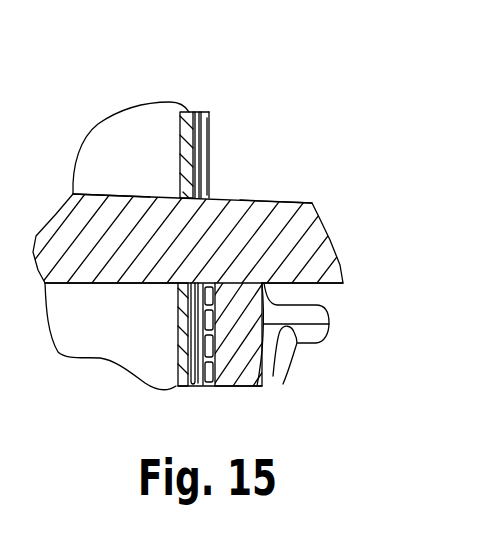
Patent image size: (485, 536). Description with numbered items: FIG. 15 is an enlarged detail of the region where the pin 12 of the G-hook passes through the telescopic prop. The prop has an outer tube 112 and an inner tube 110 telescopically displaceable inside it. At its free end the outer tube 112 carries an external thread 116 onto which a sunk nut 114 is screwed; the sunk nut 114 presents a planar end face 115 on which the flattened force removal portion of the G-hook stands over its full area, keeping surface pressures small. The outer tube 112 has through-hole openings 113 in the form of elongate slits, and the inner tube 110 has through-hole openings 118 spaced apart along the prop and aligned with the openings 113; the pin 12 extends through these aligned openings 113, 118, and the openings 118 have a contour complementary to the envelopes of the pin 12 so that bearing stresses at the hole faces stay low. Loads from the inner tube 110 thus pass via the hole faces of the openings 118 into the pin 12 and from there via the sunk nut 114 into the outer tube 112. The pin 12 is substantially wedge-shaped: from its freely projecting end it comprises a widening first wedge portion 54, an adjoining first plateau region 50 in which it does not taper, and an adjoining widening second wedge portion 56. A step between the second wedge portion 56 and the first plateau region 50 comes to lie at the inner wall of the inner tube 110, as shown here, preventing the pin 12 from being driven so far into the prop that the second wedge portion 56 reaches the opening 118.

The pin 12 is at (318, 245).
The first plateau region 50 is at (203, 182).
The first wedge portion 54 is at (301, 203).
The second wedge portion 56 is at (134, 193).
The inner tube 110 is at (191, 112).
The through-hole openings 113 is at (210, 113).
The outer tube 112 is at (213, 347).
The sunk nut 114 is at (318, 305).
The planar end face 115 is at (300, 324).
The external thread 116 is at (312, 393).
The through-hole openings 118 is at (172, 286).